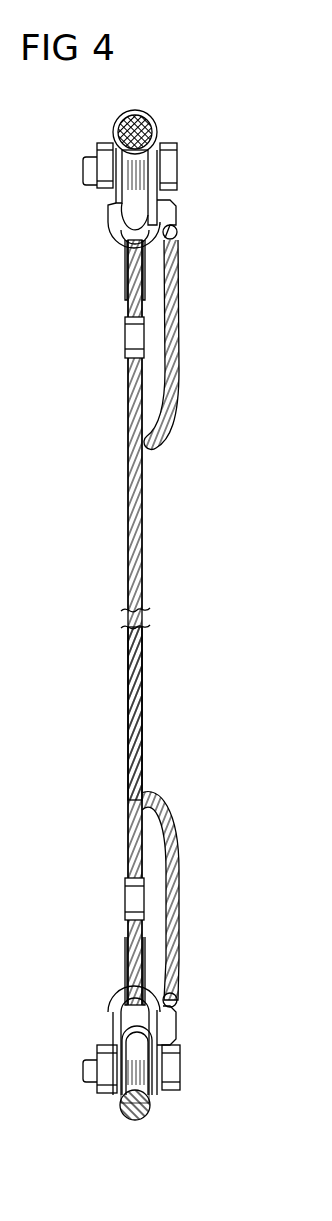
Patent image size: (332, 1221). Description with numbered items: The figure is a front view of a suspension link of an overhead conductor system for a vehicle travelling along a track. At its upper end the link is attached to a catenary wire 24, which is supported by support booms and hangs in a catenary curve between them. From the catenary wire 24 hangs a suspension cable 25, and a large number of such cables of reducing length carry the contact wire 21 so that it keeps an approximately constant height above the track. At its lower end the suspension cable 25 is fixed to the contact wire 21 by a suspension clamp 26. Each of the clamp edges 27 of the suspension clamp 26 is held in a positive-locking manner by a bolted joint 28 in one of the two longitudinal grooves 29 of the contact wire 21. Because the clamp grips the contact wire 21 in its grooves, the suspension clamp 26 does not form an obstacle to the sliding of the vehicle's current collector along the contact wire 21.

The contact wire 21 is at (142, 1119).
The catenary wire 24 is at (150, 125).
The suspension cable 25 is at (133, 566).
The suspension clamp 26 is at (125, 1030).
The clamp edge 27 is at (150, 1101).
The bolted joint 28 is at (103, 1067).
The longitudinal groove 29 is at (121, 1100).